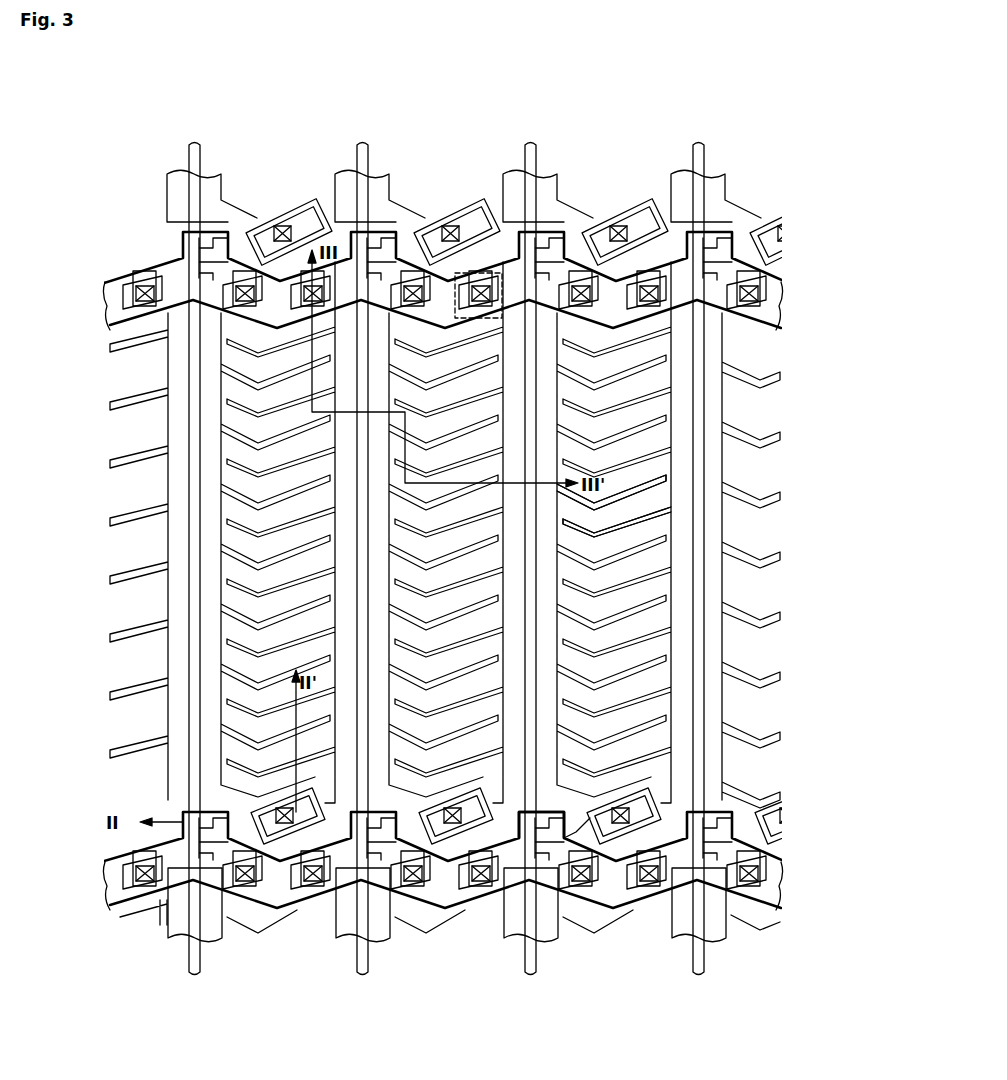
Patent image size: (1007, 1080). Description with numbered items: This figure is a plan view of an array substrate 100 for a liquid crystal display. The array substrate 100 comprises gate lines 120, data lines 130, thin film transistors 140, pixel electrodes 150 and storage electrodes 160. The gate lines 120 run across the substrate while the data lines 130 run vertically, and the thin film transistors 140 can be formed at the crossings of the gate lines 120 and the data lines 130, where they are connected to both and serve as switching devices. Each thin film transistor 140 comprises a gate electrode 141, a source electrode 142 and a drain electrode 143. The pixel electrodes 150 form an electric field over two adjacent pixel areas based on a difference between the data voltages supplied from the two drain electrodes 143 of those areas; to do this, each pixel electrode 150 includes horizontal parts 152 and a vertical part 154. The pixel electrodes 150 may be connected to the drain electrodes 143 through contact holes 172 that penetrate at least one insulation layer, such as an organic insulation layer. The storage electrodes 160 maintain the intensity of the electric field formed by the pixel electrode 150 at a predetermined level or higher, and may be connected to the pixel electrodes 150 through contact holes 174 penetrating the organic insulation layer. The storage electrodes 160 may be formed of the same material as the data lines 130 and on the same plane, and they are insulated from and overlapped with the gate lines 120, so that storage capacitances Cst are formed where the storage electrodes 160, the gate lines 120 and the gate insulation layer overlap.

The array substrate 100 is at (880, 102).
The gate lines 120 is at (105, 881).
The data lines 130 is at (195, 145).
The thin film transistors 140 is at (172, 832).
The gate electrode 141 is at (518, 826).
The source electrode 142 is at (540, 858).
The drain electrode 143 is at (587, 834).
The pixel electrodes 150 is at (845, 452).
The horizontal parts 152 is at (620, 498).
The vertical part 154 is at (570, 546).
The storage electrodes 160 is at (442, 294).
The contact holes 172 is at (292, 818).
The contact holes 174 is at (325, 291).
The storage capacitances Cst is at (500, 274).